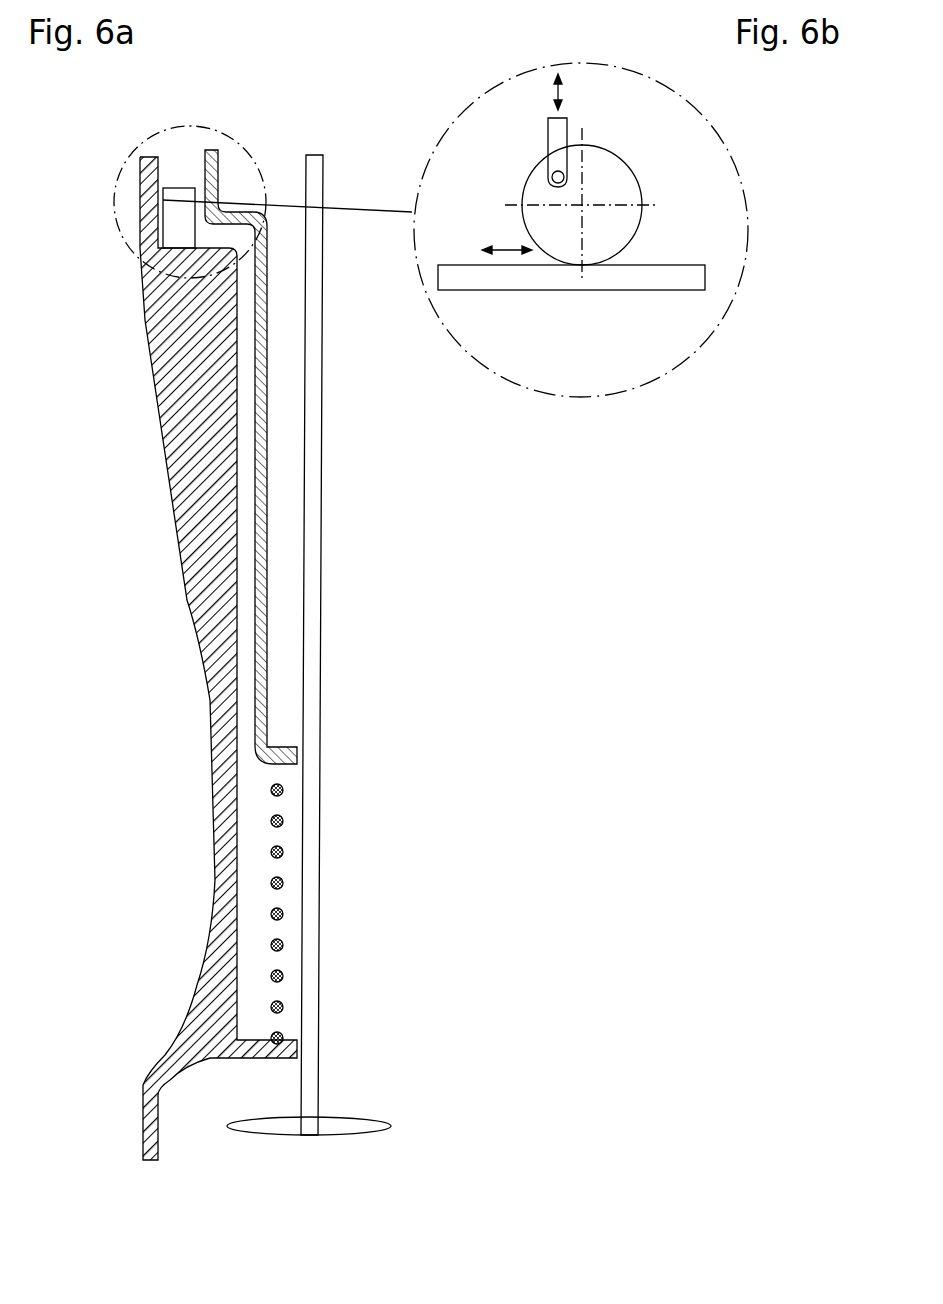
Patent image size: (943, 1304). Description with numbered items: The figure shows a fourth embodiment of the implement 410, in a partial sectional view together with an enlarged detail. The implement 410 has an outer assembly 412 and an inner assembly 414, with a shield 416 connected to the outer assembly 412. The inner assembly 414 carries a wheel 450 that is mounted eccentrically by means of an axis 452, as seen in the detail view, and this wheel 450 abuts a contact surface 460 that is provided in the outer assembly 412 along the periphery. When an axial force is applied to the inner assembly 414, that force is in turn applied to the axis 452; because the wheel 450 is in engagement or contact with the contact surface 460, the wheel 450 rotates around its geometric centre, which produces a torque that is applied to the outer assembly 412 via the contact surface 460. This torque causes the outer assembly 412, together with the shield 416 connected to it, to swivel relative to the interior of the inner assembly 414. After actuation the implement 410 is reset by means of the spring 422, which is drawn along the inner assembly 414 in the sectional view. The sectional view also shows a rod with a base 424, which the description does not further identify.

In FIG. 6a, the implement 410 is at (172, 658).
In FIG. 6a, the outer assembly 412 is at (166, 353).
In FIG. 6a, the inner assembly 414 is at (222, 162).
In FIG. 6a, the shield 416 is at (146, 1122).
In FIG. 6a, the spring 422 is at (271, 880).
In FIG. 6a, the rod with base plate 424 is at (365, 1124).
In FIG. 6b, the wheel 450 is at (626, 197).
In FIG. 6b, the axis 452 is at (563, 178).
In FIG. 6b, the contact surface 460 is at (679, 262).